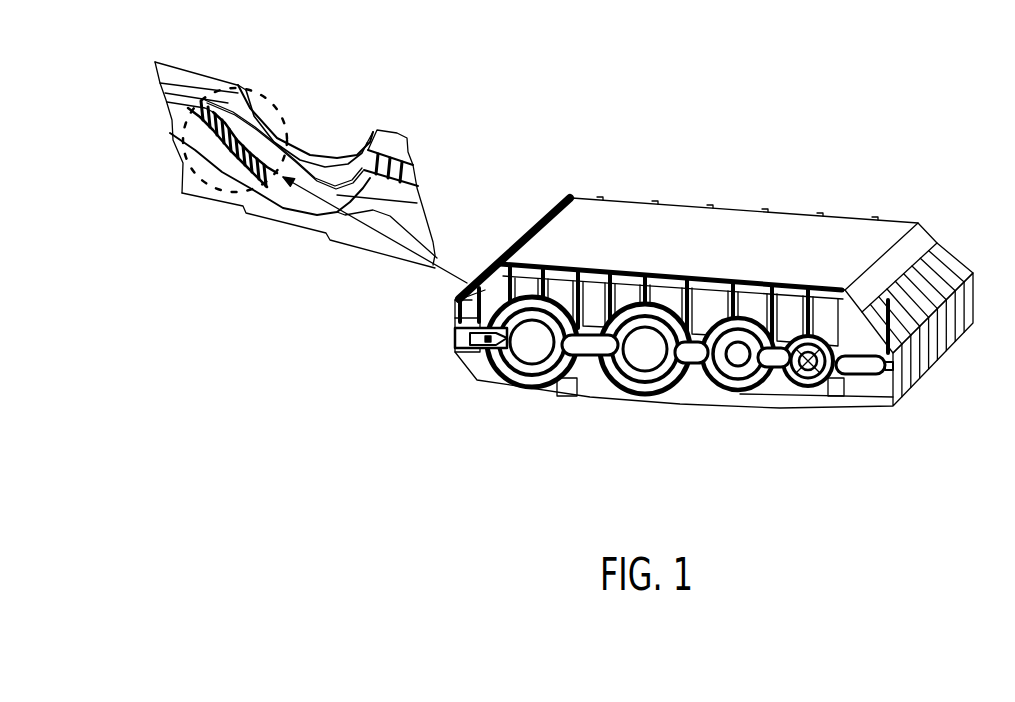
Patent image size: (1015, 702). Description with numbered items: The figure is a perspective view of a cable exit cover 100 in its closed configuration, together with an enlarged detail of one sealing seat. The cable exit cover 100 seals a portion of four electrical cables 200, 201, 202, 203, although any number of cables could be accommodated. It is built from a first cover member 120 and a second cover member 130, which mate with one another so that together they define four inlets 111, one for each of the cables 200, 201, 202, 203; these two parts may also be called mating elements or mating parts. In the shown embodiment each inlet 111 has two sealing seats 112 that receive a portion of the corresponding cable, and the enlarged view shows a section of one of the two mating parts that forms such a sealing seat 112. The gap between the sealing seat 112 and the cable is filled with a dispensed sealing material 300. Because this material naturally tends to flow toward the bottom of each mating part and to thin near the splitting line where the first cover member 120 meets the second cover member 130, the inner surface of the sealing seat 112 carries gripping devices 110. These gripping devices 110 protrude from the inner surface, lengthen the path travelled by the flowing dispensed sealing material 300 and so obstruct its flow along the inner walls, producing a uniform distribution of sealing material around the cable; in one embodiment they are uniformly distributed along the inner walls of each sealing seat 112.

The cable exit cover 100 is at (669, 290).
The gripping devices 110 is at (311, 153).
The inlets 111 is at (654, 306).
The sealing seats 112 is at (322, 184).
The first cover member 120 is at (882, 422).
The second cover member 130 is at (820, 206).
The electrical cable 200 is at (527, 347).
The electrical cable 201 is at (633, 350).
The electrical cable 202 is at (730, 360).
The electrical cable 203 is at (807, 363).
The dispensed sealing material 300 is at (453, 337).